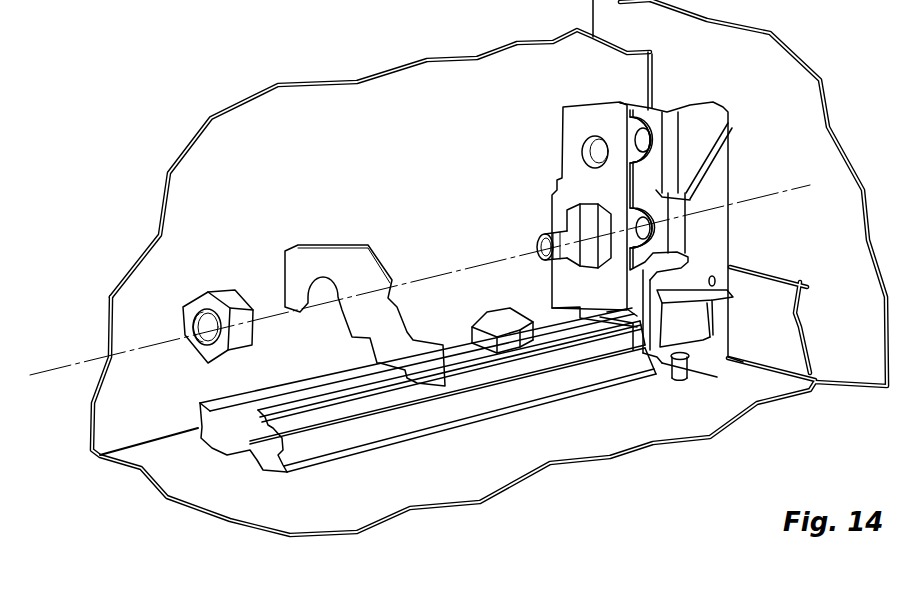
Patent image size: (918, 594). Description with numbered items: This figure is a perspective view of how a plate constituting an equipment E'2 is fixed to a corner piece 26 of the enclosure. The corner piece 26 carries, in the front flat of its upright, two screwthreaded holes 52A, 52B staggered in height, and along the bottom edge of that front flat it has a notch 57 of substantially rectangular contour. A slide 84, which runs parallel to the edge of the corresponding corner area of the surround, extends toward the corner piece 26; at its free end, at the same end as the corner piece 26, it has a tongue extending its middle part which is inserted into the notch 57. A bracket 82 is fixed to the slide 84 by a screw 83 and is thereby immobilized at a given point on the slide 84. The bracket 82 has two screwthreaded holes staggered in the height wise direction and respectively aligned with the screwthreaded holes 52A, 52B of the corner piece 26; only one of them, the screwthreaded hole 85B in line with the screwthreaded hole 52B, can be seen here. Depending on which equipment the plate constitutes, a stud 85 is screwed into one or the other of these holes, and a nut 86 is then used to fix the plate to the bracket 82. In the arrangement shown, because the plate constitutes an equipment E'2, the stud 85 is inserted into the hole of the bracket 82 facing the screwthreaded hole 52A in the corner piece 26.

The corner piece 26 is at (715, 375).
The screwthreaded hole 52A is at (638, 218).
The screwthreaded hole 52B is at (638, 128).
The notch 57 is at (670, 372).
The bracket 82 is at (558, 133).
The screw 83 is at (485, 305).
The slide 84 is at (403, 452).
The stud 85 is at (537, 227).
The screwthreaded hole 85B is at (587, 133).
The nut 86 is at (190, 365).
The equipment E'2 is at (365, 283).